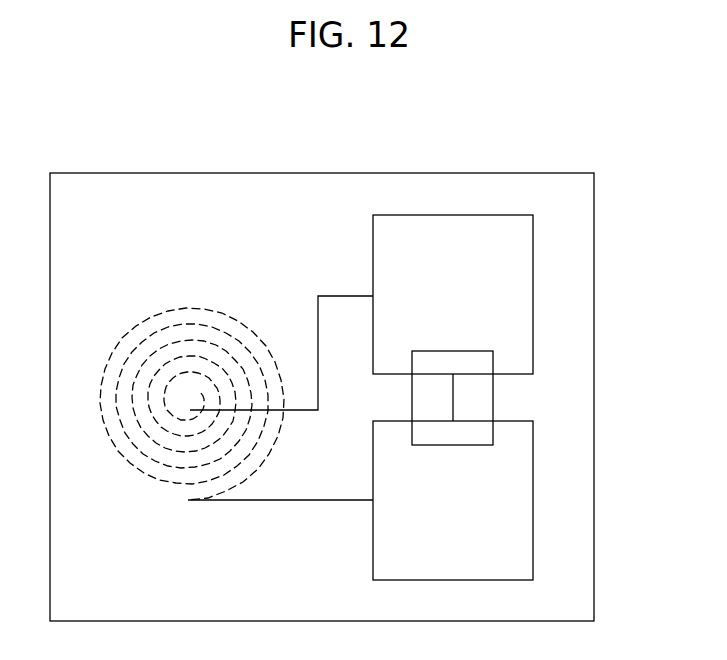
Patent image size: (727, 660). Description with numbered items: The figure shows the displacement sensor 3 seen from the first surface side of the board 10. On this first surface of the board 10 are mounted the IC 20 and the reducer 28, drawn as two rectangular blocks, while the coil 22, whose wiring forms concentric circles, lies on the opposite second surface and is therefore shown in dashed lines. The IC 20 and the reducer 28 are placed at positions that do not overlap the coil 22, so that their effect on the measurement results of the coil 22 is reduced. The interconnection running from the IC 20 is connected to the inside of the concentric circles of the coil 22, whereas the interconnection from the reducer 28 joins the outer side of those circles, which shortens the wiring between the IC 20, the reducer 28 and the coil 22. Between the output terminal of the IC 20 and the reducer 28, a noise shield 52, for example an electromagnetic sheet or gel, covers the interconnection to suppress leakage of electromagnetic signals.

The displacement sensor 3 is at (599, 153).
The board 10 is at (594, 190).
The IC 20 is at (533, 287).
The coil 22 is at (186, 298).
The reducer 28 is at (533, 498).
The noise shield 52 is at (493, 397).